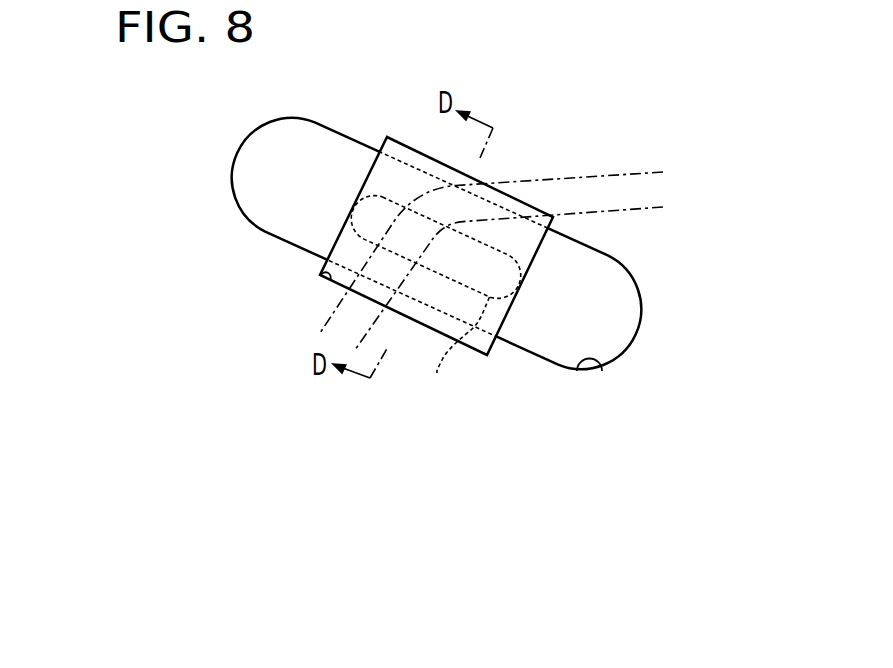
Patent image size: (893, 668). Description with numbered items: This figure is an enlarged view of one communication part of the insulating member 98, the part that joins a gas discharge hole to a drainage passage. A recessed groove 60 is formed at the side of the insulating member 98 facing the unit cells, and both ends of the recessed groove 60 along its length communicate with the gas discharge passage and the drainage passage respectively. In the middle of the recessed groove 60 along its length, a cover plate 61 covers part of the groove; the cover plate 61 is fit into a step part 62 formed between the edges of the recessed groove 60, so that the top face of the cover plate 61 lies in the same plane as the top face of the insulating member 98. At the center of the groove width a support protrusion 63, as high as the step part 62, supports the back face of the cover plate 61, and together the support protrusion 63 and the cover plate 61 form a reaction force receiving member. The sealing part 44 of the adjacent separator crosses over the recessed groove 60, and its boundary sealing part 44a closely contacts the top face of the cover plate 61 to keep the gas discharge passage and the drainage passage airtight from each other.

The recessed groove 60 is at (583, 373).
The cover plate 61 is at (407, 146).
The step part 62 is at (318, 270).
The support protrusion 63 is at (435, 304).
The boundary sealing part 44a is at (613, 172).
The sealing part 44 is at (510, 215).
The insulating member 98 is at (640, 248).